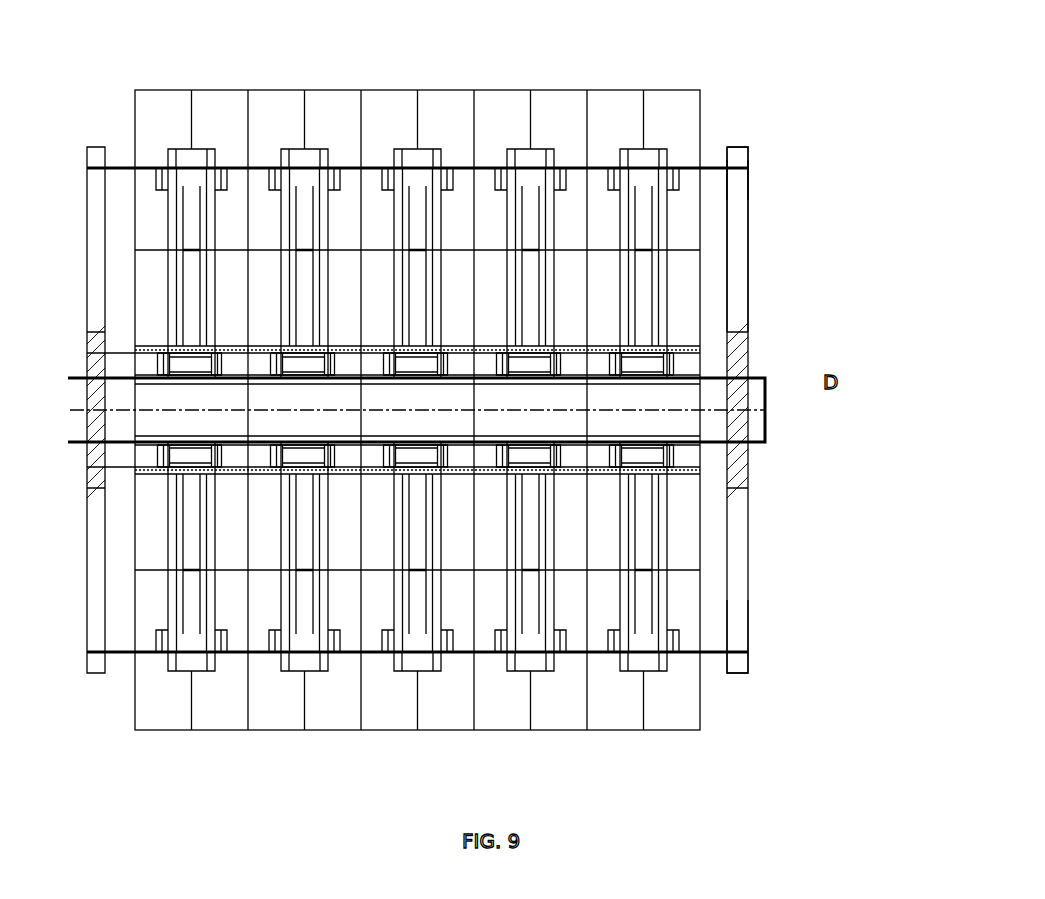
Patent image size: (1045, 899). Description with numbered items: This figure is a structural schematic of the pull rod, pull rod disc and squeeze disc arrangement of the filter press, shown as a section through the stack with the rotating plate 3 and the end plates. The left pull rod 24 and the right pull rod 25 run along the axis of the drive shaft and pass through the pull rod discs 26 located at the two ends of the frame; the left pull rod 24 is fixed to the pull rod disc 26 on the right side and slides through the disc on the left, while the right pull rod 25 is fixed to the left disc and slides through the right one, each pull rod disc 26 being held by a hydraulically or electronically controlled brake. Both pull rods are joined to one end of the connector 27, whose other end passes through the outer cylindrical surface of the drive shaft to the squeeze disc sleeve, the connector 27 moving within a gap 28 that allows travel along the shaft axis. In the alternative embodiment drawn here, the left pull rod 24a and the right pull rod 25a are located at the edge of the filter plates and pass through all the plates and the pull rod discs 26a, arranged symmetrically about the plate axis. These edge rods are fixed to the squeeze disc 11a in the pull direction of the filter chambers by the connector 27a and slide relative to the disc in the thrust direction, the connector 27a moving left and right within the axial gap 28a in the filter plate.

The rotating plate 3 is at (699, 668).
The squeeze disc 11a is at (667, 150).
The left pull rod 24 is at (870, 408).
The left pull rod 24a is at (747, 497).
The right pull rod 25 is at (718, 372).
The right pull rod 25a is at (735, 172).
The pull rod disc 26 is at (554, 168).
The pull rod disc 26a is at (740, 153).
The connector 27 is at (186, 570).
The connector 27a is at (153, 168).
The gap 28 is at (244, 448).
The axial gap 28a is at (281, 190).